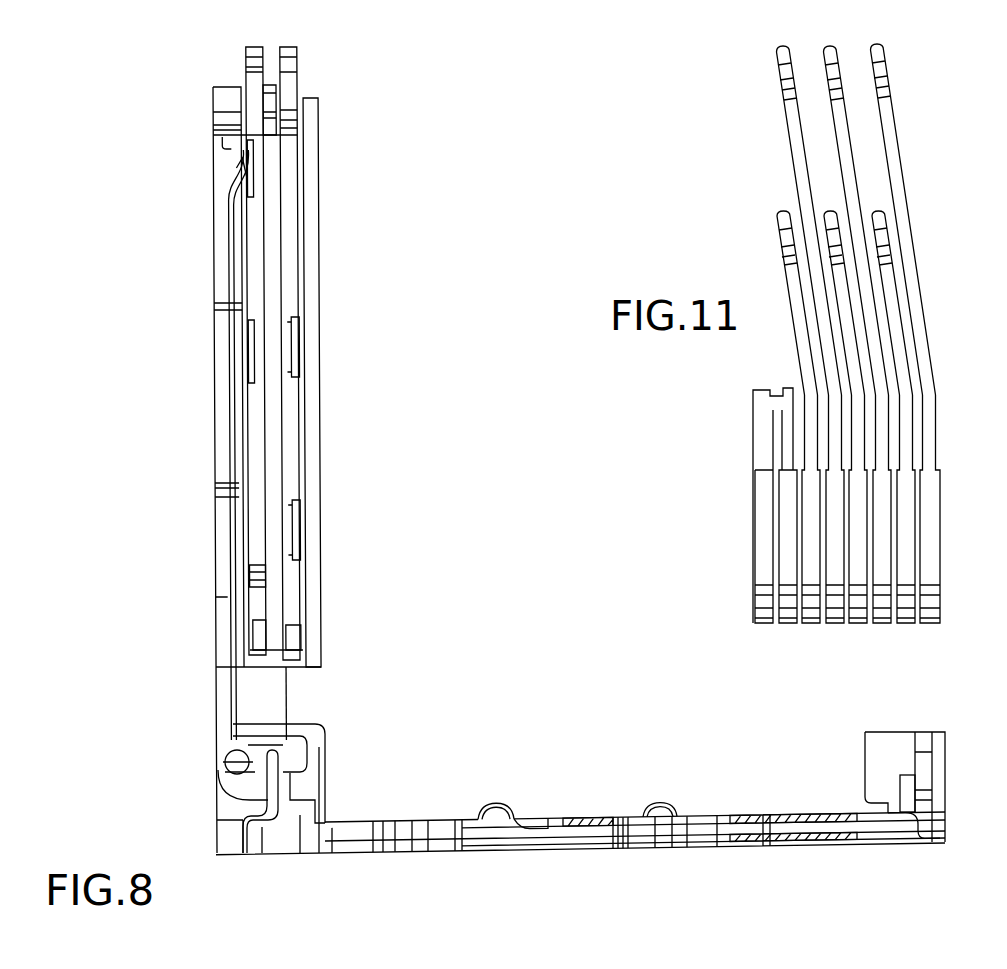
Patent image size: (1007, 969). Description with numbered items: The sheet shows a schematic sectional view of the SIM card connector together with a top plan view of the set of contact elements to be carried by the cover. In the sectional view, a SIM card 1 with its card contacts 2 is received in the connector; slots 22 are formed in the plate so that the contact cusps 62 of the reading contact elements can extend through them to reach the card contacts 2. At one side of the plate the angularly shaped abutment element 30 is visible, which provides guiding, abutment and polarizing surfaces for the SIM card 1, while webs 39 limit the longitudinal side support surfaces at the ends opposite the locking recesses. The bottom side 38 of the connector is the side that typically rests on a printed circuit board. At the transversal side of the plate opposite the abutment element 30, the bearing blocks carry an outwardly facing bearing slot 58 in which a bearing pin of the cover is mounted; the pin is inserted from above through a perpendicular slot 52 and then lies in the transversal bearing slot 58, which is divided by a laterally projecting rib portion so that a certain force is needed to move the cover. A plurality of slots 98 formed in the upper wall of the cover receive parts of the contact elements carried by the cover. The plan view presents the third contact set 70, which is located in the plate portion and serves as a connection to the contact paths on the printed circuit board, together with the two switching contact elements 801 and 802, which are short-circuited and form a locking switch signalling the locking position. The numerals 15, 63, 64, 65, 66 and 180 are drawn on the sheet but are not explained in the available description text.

In FIG. 8, the SIM card 1 is at (290, 177).
In FIG. 8, the card contacts 2 is at (296, 333).
In FIG. 8, the base housing 15 is at (548, 851).
In FIG. 8, the slots 22 is at (462, 821).
In FIG. 8, the abutment element 30 is at (889, 728).
In FIG. 8, the bottom side 38 is at (366, 853).
In FIG. 8, the webs 39 is at (338, 832).
In FIG. 8, the perpendicular slots 52 is at (262, 725).
In FIG. 8, the bearing slot 58 is at (298, 746).
In FIG. 8, the contact cusps 62 is at (651, 812).
In FIG. 8, the hatched retention region 63 is at (722, 851).
In FIG. 8, the end portion 64 is at (937, 852).
In FIG. 8, the insertion direction 65 is at (748, 757).
In FIG. 8, the insertion direction 66 is at (815, 757).
In FIG. 11, the third contact set 70 is at (838, 333).
In FIG. 8, the slots 98 is at (222, 143).
In FIG. 8, the end contact 180 is at (866, 852).
In FIG. 11, the switching contact element 801 is at (764, 540).
In FIG. 11, the switching contact element 802 is at (785, 567).